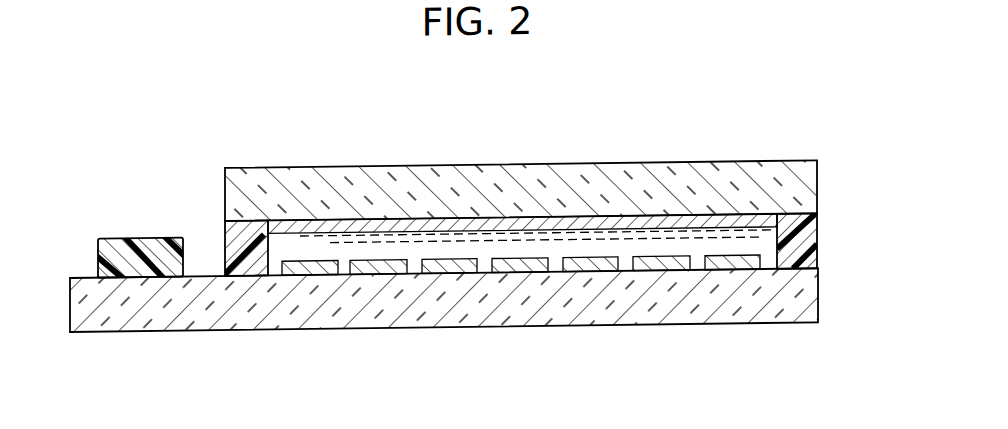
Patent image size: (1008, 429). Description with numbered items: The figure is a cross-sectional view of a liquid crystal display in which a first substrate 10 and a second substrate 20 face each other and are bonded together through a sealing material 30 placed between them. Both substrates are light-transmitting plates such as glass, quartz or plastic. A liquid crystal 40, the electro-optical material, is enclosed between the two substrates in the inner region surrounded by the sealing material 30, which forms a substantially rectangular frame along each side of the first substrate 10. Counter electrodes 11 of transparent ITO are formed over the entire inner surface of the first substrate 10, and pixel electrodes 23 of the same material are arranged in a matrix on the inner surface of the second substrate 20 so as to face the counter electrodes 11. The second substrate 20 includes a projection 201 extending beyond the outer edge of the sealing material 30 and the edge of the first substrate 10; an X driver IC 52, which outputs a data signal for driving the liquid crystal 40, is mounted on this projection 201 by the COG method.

The first substrate 10 is at (800, 192).
The counter electrodes 11 is at (533, 226).
The second substrate 20 is at (803, 302).
The pixel electrodes 23 is at (660, 266).
The sealing material 30 is at (810, 240).
The liquid crystal 40 is at (628, 249).
The X driver IC 52 is at (147, 239).
The projection 201 is at (69, 267).